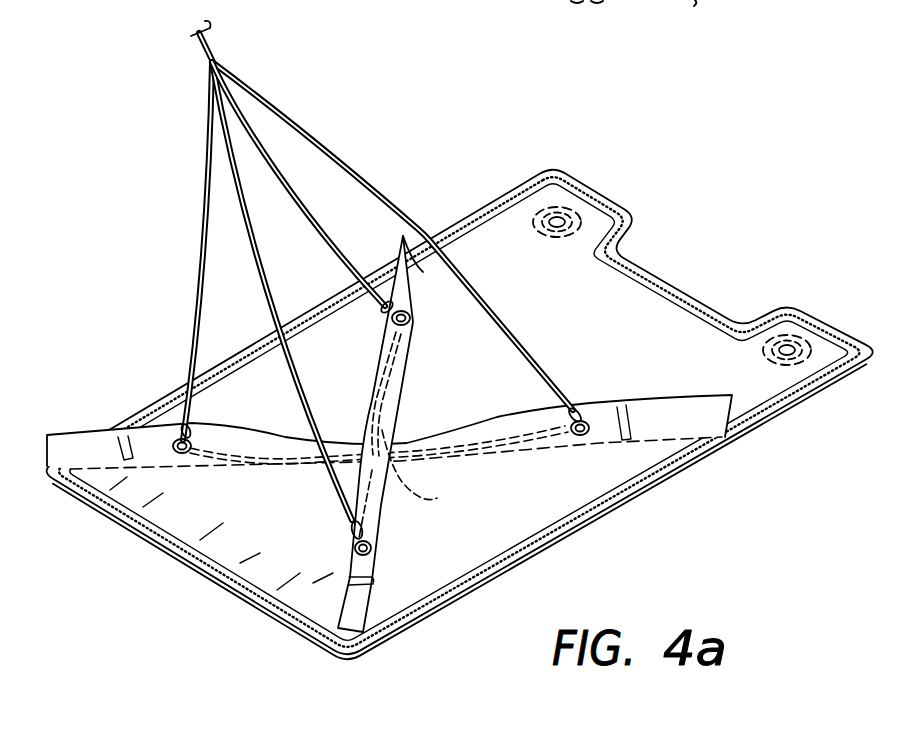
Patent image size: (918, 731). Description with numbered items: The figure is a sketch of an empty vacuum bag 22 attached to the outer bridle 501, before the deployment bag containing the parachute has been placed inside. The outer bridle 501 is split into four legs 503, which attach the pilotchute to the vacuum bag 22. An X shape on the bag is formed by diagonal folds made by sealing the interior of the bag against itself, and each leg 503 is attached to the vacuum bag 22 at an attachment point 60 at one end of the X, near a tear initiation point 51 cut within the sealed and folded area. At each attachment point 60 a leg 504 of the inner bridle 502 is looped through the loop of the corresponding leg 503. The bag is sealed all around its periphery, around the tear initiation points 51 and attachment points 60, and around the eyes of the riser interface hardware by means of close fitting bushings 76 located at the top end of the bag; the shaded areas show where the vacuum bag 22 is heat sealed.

The vacuum bag 22 is at (45, 462).
The tear initiation point 51 is at (623, 425).
The vacuum bag attachment point 60 is at (390, 306).
The bushing 76 is at (573, 213).
The outer bridle 501 is at (212, 34).
The inner bridle 502 is at (440, 495).
The leg of outer bridle 503 is at (283, 113).
The leg of inner bridle 504 is at (267, 470).